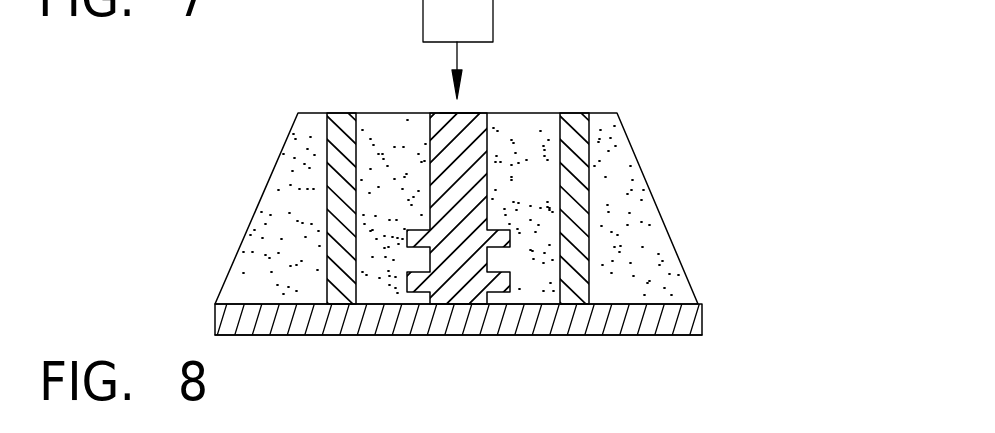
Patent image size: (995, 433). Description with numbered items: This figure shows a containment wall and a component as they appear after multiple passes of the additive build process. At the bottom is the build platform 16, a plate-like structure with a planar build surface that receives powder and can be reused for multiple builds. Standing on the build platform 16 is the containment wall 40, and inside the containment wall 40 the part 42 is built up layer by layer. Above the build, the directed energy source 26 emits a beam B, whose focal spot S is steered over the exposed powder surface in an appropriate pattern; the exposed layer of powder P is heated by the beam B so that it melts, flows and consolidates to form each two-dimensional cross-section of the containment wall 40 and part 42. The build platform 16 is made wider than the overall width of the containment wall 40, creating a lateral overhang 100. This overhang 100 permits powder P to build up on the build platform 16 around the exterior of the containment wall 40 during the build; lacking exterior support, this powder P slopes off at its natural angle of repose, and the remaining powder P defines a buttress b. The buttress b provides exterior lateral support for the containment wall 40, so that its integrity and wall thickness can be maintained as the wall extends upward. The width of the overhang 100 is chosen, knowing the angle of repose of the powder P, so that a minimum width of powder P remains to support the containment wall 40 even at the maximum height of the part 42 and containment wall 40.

The directed energy source 26 is at (472, 18).
The beam B is at (458, 50).
The focal spot S is at (460, 100).
The part 42 is at (448, 130).
The containment wall 40 is at (575, 140).
The buttress b is at (637, 196).
The powder P is at (461, 207).
The build platform 16 is at (690, 315).
The lateral overhang 100 is at (628, 327).